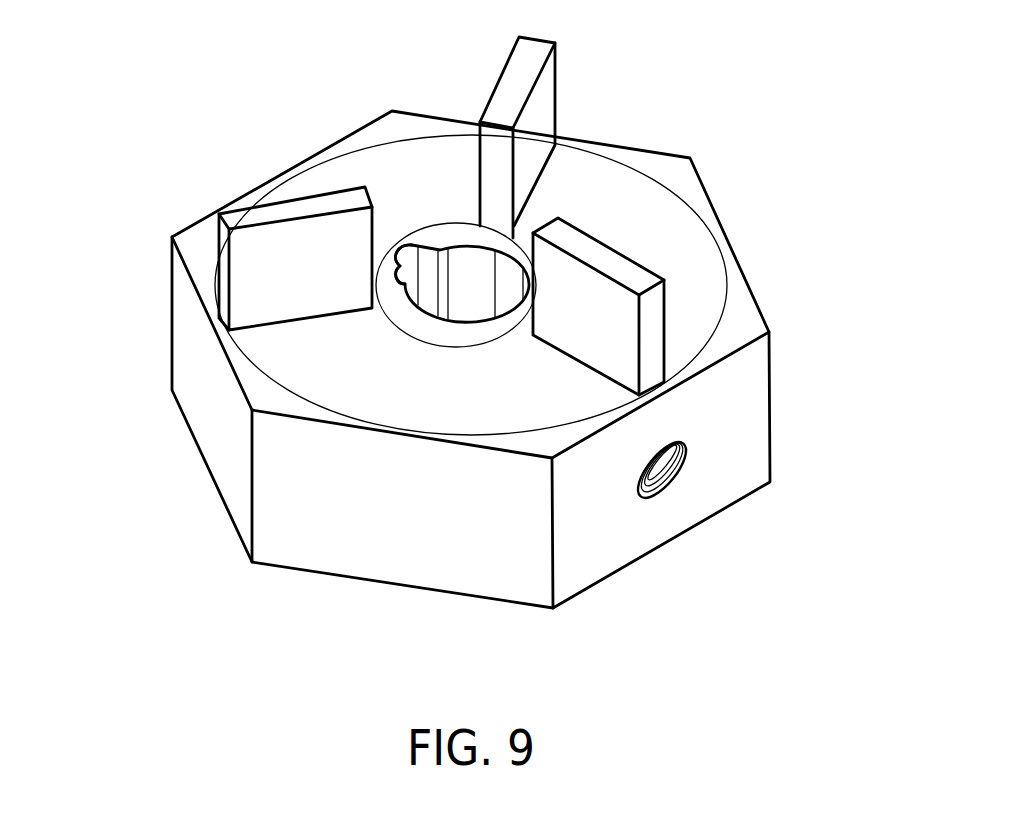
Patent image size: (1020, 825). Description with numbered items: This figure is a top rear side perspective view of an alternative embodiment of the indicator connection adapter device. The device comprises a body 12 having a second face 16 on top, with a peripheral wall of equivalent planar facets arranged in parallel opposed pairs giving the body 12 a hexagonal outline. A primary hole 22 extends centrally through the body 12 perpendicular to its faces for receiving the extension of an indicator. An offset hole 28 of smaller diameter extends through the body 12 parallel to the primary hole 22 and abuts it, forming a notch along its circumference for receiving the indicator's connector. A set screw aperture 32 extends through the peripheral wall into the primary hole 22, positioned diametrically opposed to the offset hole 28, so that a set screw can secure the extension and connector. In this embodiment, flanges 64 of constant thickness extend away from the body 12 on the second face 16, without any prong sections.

The body 12 is at (146, 470).
The second face 16 is at (690, 250).
The primary hole 22 is at (489, 296).
The offset hole 28 is at (407, 255).
The set screw aperture 32 is at (678, 472).
The flanges 64 is at (272, 255).